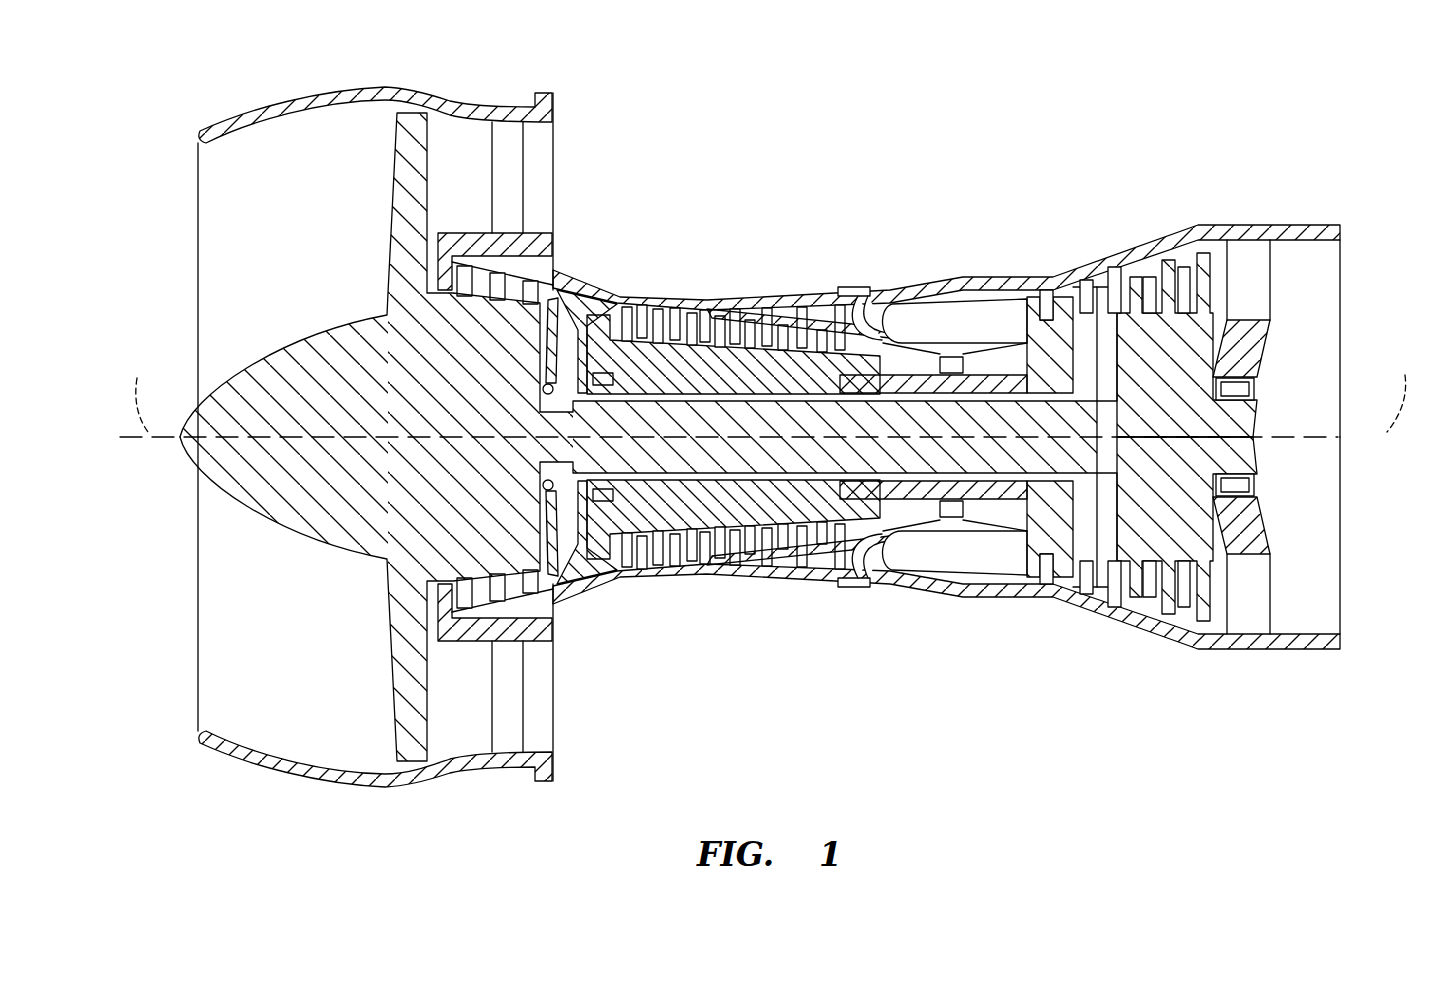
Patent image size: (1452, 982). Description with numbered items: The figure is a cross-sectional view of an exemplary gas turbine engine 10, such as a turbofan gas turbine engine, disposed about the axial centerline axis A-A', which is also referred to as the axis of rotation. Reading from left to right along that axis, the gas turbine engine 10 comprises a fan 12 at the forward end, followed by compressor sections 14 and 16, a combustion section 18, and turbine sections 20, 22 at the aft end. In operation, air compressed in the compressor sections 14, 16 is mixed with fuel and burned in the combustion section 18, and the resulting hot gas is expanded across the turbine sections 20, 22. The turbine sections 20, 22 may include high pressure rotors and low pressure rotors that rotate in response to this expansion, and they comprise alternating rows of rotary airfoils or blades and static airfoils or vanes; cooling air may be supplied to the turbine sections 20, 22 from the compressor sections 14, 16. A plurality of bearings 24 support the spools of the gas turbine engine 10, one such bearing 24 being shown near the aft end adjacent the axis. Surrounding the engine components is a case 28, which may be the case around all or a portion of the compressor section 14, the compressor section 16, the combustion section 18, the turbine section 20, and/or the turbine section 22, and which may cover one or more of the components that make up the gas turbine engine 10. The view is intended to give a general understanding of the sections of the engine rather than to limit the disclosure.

The gas turbine engine 10 is at (1012, 172).
The fan 12 is at (428, 158).
The compressor section 14 is at (430, 793).
The compressor section 16 is at (628, 617).
The combustion section 18 is at (870, 641).
The turbine section 20 is at (1048, 665).
The turbine section 22 is at (1227, 665).
The bearing 24 is at (1253, 387).
The case 28 is at (597, 290).